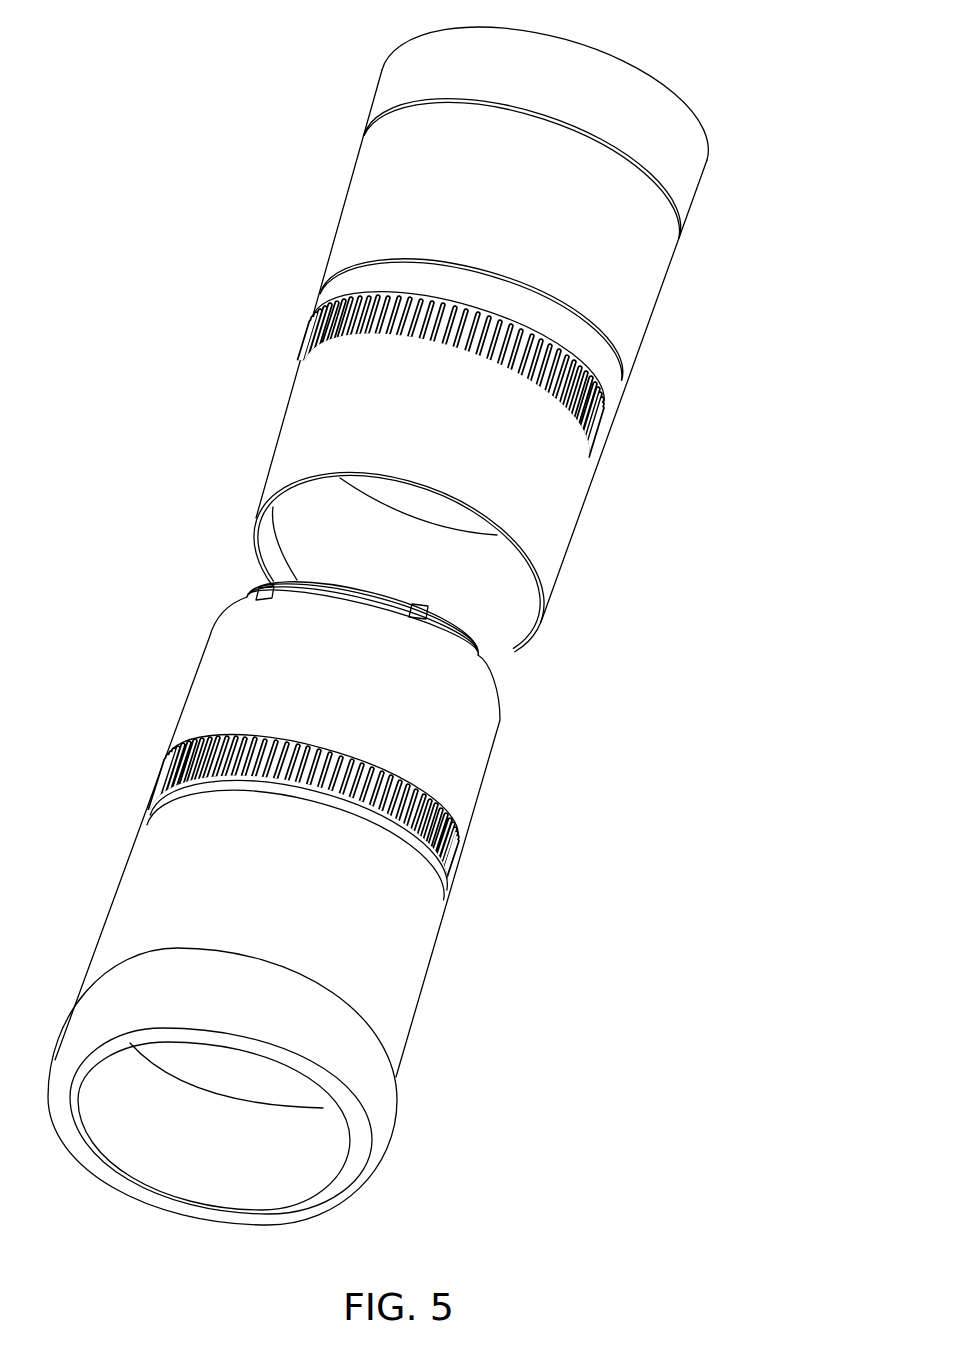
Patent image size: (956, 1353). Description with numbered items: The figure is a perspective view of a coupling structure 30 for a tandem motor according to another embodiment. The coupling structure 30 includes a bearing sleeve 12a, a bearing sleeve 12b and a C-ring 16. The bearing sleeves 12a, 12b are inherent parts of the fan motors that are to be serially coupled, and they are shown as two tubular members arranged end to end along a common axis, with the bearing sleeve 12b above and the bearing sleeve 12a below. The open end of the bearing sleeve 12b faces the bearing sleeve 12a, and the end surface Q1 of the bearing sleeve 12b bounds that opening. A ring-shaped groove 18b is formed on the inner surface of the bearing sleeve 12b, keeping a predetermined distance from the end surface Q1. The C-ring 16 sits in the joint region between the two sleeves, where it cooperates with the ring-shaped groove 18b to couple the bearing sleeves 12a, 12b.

The coupling structure 30 is at (203, 363).
The bearing sleeve 12a is at (475, 803).
The bearing sleeve 12b is at (572, 522).
The ring-shaped groove 18b is at (532, 636).
The C-ring 16 is at (483, 655).
The end surface Q1 is at (250, 535).